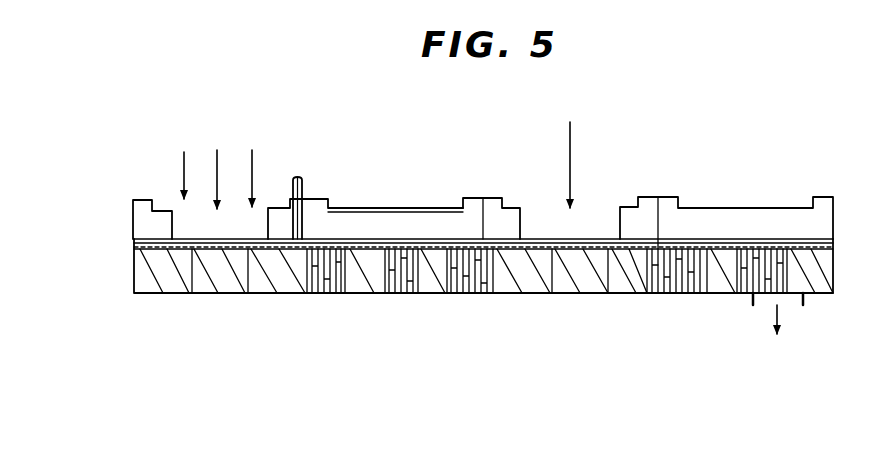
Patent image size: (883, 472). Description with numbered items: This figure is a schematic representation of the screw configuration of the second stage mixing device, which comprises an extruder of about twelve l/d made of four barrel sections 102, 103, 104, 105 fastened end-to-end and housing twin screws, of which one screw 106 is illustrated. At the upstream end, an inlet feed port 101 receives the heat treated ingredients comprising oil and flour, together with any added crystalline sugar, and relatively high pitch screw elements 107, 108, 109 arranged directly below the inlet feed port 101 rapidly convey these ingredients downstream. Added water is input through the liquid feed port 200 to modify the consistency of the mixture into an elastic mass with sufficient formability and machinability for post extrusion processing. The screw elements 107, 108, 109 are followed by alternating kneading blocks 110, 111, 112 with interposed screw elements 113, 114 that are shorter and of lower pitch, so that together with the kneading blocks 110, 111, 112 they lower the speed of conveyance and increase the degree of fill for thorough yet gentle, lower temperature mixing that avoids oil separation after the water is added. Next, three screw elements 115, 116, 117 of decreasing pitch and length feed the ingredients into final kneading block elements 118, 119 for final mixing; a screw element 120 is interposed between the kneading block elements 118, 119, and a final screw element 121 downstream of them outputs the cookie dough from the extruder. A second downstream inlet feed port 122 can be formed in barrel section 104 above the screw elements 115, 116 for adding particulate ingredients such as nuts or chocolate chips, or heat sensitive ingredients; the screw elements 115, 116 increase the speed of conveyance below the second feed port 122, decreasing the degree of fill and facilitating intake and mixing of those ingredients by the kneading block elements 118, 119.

The inlet feed port 101 is at (183, 224).
The barrel section 102 is at (140, 201).
The barrel section 103 is at (341, 210).
The barrel section 104 is at (495, 196).
The barrel section 105 is at (717, 189).
The screw 106 is at (133, 268).
The high pitch screw element 107 is at (163, 294).
The high pitch screw element 108 is at (217, 294).
The high pitch screw element 109 is at (283, 294).
The kneading block 110 is at (325, 294).
The kneading block 111 is at (398, 294).
The kneading block 112 is at (467, 294).
The screw element 113 is at (367, 294).
The screw element 114 is at (442, 294).
The screw element 115 is at (523, 294).
The screw element 116 is at (573, 294).
The screw element 117 is at (623, 294).
The final kneading block element 118 is at (668, 294).
The final kneading block element 119 is at (740, 294).
The screw element 120 is at (718, 294).
The final screw element 121 is at (822, 294).
The second downstream inlet feed port 122 is at (596, 212).
The liquid feed port 200 is at (300, 184).